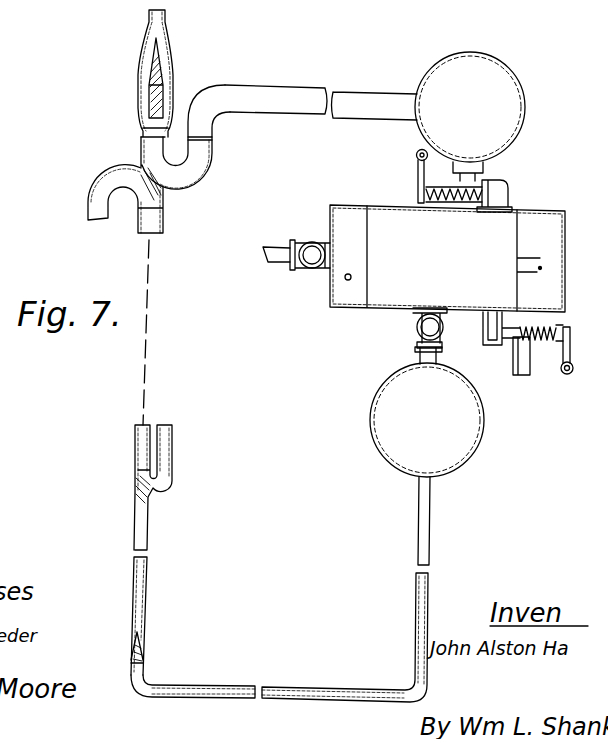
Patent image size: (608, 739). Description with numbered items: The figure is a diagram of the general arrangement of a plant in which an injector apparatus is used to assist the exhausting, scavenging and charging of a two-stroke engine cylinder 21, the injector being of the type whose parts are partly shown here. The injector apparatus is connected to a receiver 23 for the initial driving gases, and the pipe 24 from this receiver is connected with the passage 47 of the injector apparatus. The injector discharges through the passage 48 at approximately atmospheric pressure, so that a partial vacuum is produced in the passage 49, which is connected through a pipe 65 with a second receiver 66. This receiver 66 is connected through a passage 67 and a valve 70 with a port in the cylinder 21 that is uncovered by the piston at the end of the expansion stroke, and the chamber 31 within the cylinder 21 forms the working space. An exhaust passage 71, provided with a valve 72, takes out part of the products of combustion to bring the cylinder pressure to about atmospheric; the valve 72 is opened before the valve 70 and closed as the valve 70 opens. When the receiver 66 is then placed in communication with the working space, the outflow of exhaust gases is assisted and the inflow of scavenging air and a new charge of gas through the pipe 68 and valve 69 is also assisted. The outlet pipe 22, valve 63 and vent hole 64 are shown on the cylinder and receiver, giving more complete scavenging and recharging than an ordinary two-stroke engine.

The cylinder 21 is at (357, 183).
The outlet pipe 22 is at (428, 356).
The receiver 23 is at (468, 421).
The pipe 24 is at (423, 540).
The cylinder chamber 31 is at (447, 258).
The passage 47 is at (140, 658).
The passage 48 is at (158, 27).
The passage 49 is at (197, 168).
The outlet valve 63 is at (417, 326).
The vent hole 64 is at (345, 280).
The pipe 65 is at (352, 97).
The receiver 66 is at (512, 110).
The passage 67 is at (508, 192).
The pipe 68 is at (282, 240).
The valve 69 is at (311, 244).
The valve 70 is at (440, 201).
The exhaust passage 71 is at (522, 364).
The valve 72 is at (512, 342).